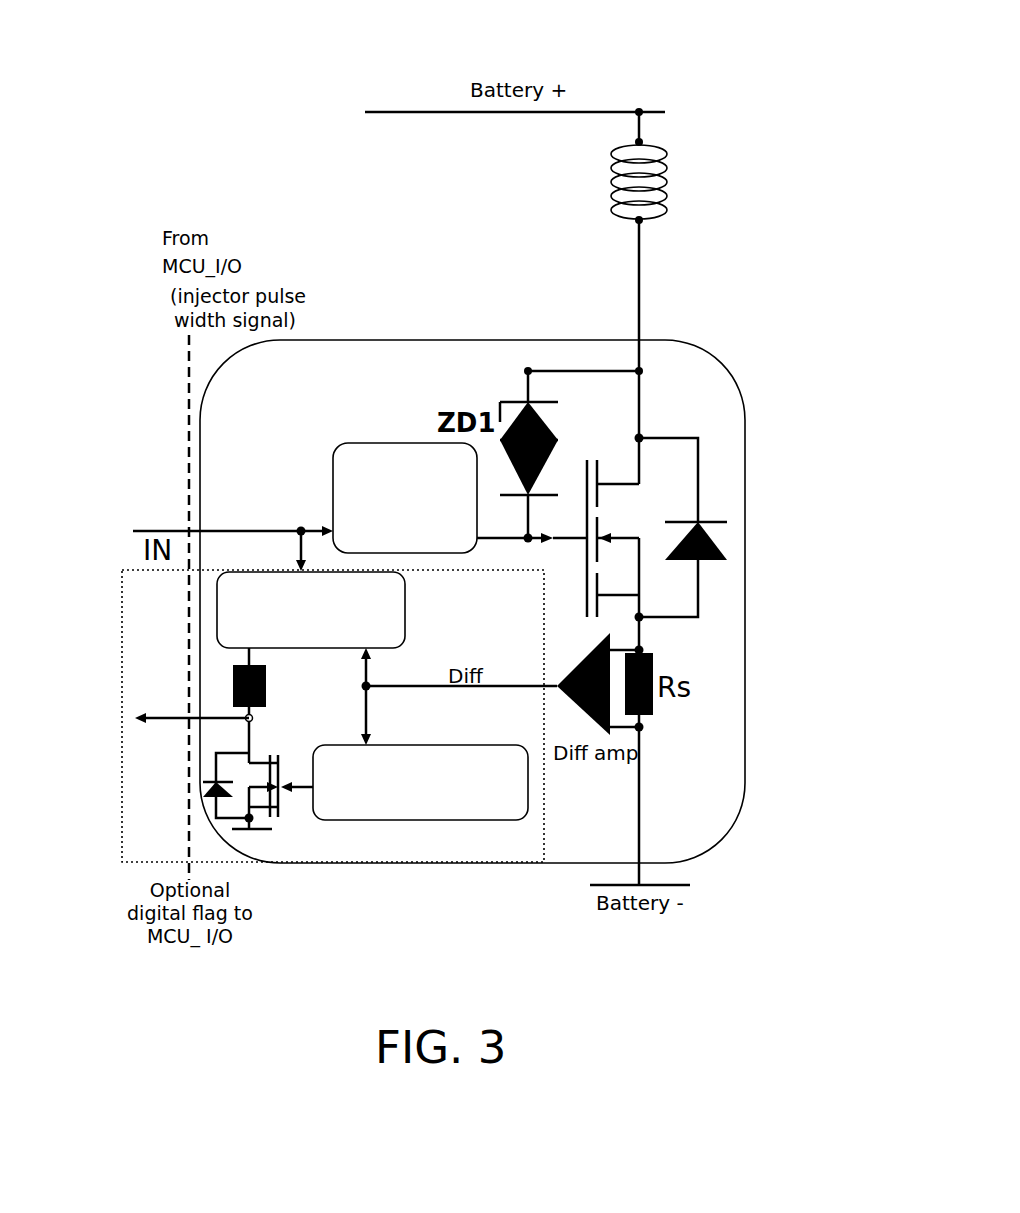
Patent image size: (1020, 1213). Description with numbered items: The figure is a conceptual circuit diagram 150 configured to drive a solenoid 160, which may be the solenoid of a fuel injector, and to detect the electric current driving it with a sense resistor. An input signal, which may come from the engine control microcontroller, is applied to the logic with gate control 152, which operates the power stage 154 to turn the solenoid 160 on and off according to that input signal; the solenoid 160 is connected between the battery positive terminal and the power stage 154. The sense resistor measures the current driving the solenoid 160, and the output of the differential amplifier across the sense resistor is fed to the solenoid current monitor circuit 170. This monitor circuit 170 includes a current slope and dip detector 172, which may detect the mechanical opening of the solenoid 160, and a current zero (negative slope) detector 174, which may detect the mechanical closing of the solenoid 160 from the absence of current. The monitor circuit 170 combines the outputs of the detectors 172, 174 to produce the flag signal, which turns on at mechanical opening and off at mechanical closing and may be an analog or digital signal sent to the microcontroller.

The conceptual circuit diagram 150 is at (134, 97).
The logic with gate control 152 is at (405, 498).
The power stage 154 is at (711, 518).
The solenoid 160 is at (691, 182).
The solenoid current monitor circuit 170 is at (122, 595).
The current slope and dip detector 172 is at (311, 610).
The current zero (−ve slope) detector 174 is at (420, 782).